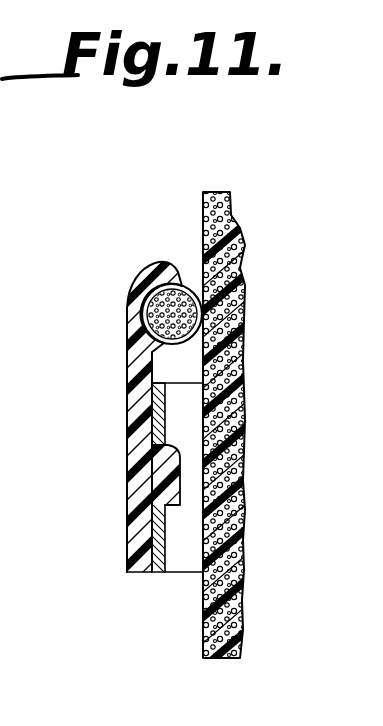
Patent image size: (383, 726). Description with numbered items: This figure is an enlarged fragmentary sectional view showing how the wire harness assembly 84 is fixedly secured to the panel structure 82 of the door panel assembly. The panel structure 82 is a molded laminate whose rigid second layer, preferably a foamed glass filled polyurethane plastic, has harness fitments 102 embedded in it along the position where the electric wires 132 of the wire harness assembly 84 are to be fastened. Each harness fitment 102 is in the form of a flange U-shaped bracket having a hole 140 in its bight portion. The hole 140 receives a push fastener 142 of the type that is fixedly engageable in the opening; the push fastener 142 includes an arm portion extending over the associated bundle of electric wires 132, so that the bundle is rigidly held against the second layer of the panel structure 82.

The panel structure 82 is at (203, 208).
The wire harness assembly 84 is at (184, 285).
The electric wires 132 is at (150, 321).
The push fastener 142 is at (150, 412).
The hole 140 is at (153, 494).
The harness fitment 102 is at (184, 577).